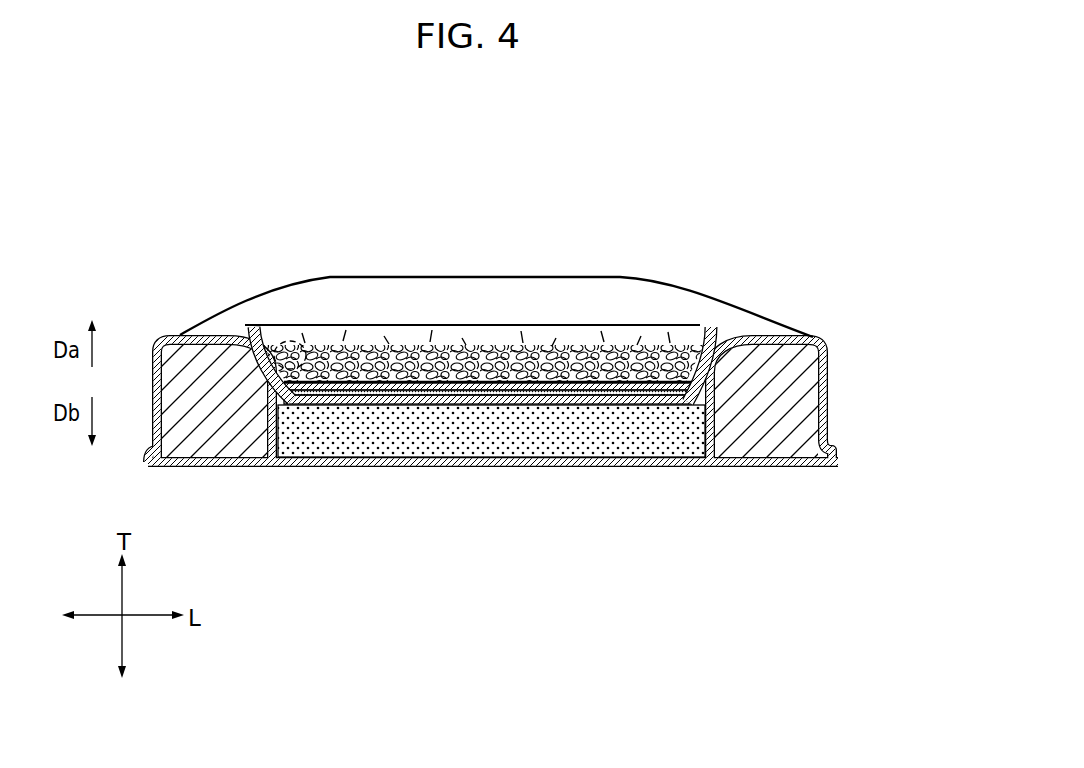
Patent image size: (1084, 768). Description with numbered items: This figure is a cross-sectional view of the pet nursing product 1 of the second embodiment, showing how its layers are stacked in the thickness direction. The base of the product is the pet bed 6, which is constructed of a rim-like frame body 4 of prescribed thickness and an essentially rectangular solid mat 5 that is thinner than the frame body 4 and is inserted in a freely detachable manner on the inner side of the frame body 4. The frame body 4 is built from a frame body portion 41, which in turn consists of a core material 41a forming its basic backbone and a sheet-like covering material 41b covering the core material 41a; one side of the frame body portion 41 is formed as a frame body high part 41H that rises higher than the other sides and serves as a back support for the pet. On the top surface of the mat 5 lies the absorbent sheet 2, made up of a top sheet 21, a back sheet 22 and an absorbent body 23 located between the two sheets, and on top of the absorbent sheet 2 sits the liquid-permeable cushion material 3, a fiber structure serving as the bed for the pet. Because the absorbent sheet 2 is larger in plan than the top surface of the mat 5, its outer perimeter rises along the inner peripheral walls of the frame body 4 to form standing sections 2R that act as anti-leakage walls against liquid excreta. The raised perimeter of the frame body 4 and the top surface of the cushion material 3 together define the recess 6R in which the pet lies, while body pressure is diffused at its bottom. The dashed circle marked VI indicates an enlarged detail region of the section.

The pet nursing product 1 is at (760, 163).
The absorbent sheet 2 is at (648, 533).
The top sheet 21 is at (627, 398).
The back sheet 22 is at (527, 395).
The absorbent body 23 is at (581, 393).
The standing section 2R is at (697, 343).
The cushion material 3 is at (392, 348).
The frame body 4 is at (848, 443).
The frame body portion 41 is at (908, 350).
The core material 41a is at (806, 421).
The covering material 41b is at (828, 362).
The frame body high part 41H is at (320, 278).
The mat 5 is at (707, 463).
The pet bed 6 is at (920, 533).
The recess 6R is at (523, 320).
The detail view region VI is at (292, 340).